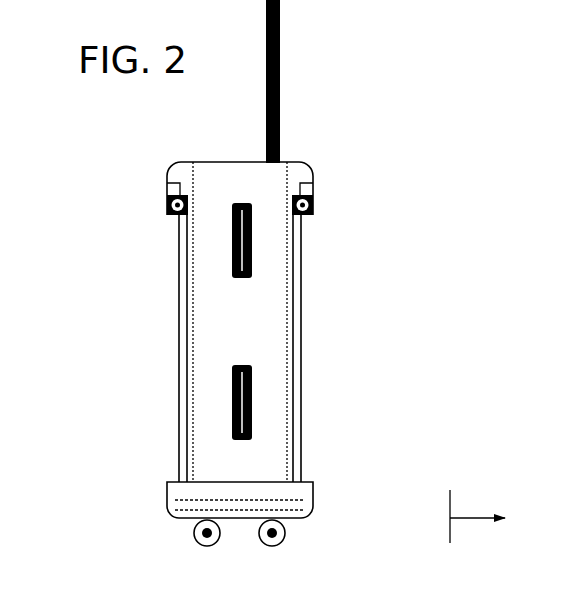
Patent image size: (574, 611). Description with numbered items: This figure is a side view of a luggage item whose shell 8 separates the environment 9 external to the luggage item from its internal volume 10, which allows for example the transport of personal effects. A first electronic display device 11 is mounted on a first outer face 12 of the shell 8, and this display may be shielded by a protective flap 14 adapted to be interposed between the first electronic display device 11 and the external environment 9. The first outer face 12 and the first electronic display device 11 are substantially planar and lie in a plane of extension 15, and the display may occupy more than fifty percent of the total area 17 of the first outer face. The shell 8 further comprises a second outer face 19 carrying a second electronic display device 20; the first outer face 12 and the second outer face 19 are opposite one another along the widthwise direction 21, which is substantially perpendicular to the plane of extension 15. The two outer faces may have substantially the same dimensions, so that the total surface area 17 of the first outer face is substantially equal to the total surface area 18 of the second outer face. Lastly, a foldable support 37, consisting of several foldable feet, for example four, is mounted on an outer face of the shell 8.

The shell 8 is at (219, 162).
The environment external to the luggage item 9 is at (87, 288).
The internal volume 10 is at (263, 370).
The first electronic display device 11 is at (187, 338).
The first outer face 12 is at (178, 396).
The protective flap 14 is at (185, 280).
The plane of extension 15 is at (450, 537).
The total area of the first outer face 17 is at (175, 470).
The total surface area of the second outer face 18 is at (305, 470).
The second outer face 19 is at (297, 278).
The second electronic display device 20 is at (295, 338).
The widthwise direction 21 is at (475, 517).
The foldable support 37 is at (248, 240).